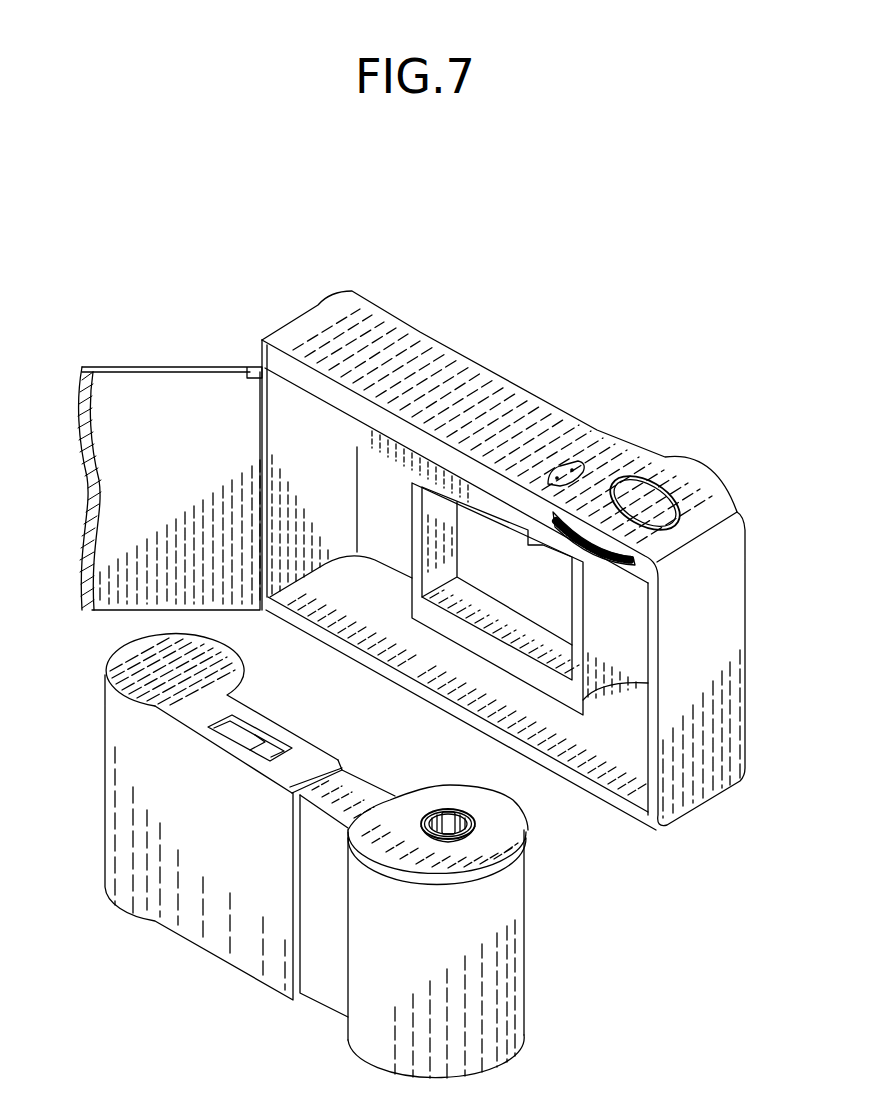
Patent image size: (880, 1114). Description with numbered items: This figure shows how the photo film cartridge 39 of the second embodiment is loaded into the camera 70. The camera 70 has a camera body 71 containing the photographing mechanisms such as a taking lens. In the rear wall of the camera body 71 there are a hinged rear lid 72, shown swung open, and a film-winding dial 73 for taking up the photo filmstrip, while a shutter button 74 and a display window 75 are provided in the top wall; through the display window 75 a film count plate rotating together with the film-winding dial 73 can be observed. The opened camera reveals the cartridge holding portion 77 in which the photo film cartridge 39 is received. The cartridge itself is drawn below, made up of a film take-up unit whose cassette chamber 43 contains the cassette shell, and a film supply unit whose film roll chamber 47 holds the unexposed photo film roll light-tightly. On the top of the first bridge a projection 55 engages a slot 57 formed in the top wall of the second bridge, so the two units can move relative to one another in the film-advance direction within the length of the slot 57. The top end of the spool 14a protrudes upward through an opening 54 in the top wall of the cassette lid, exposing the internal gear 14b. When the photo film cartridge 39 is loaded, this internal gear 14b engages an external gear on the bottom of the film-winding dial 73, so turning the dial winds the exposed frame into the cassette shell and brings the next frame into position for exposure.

The camera 70 is at (456, 325).
The camera body 71 is at (396, 262).
The hinged rear lid 72 is at (133, 385).
The film-winding dial 73 is at (593, 540).
The shutter button 74 is at (651, 498).
The display window 75 is at (560, 462).
The cartridge holding portion 77 is at (477, 692).
The film roll chamber 47 is at (120, 716).
The projection 55 is at (290, 748).
The slot 57 is at (245, 701).
The internal gear 14b is at (447, 807).
The spool 14a is at (473, 815).
The opening 54 is at (487, 830).
The photo film cartridge 39 is at (538, 948).
The cassette chamber 43 is at (523, 1033).